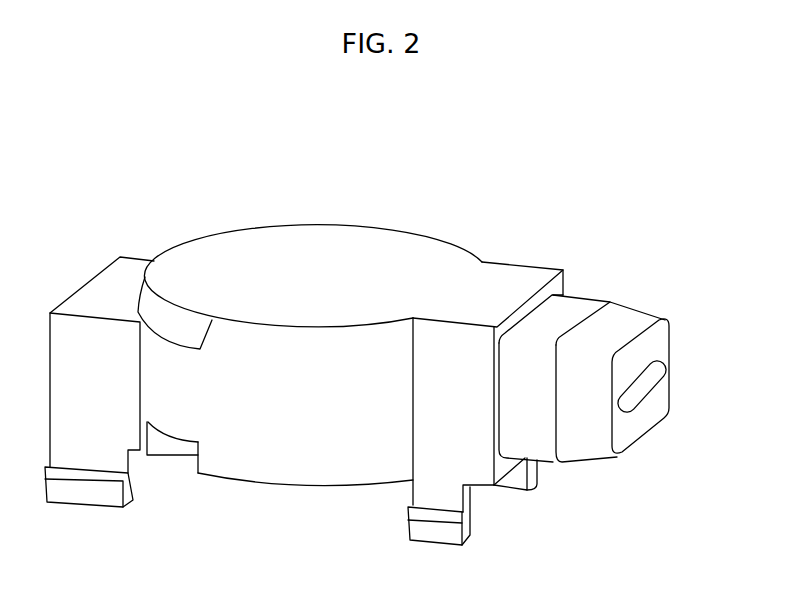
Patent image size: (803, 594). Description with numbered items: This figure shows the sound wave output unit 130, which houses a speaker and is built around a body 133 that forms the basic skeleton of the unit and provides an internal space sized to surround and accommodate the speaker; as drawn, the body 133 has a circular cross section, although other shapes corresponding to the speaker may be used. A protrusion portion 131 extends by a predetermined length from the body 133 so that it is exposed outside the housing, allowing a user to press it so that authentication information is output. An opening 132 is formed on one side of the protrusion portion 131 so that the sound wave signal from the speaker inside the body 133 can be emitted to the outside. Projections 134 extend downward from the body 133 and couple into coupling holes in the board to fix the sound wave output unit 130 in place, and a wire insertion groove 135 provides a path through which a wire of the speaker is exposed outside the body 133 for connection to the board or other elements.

The sound wave output unit 130 is at (511, 177).
The protrusion portion 131 is at (585, 417).
The opening 132 is at (657, 375).
The body 133 is at (242, 470).
The projections 134 is at (465, 527).
The wire insertion groove 135 is at (173, 460).